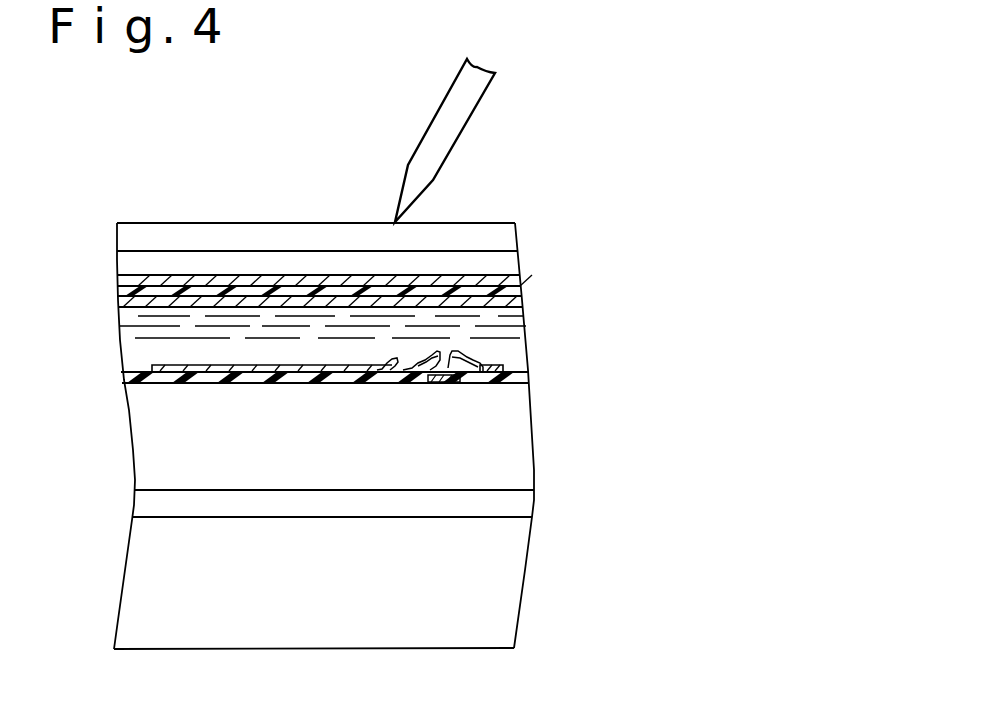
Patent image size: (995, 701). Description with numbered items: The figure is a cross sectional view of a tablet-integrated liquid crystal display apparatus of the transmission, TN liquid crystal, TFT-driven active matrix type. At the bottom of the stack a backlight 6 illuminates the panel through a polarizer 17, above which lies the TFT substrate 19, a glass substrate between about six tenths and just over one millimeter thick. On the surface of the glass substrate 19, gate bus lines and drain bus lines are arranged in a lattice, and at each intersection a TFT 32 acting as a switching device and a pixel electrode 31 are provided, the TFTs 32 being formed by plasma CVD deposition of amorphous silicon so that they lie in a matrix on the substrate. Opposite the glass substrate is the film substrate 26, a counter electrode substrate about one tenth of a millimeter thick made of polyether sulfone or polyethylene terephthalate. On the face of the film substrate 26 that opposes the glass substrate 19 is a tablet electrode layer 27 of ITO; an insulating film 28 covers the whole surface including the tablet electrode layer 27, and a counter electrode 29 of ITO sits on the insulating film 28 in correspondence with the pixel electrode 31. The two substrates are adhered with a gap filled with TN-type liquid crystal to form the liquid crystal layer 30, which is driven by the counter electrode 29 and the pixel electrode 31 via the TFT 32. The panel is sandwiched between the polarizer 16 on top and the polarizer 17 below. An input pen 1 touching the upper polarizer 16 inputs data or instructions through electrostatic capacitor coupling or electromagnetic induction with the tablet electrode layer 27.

The input pen 1 is at (484, 92).
The polarizer 16 is at (510, 235).
The film substrate 26 is at (510, 262).
The tablet electrode layer 27 is at (508, 280).
The insulating film 28 is at (508, 291).
The counter electrode 29 is at (508, 313).
The liquid crystal layer 30 is at (513, 332).
The pixel electrode 31 is at (232, 365).
The TFT 32 is at (405, 388).
The TFT substrate 19 is at (522, 459).
The polarizer 17 is at (525, 500).
The backlight 6 is at (510, 571).